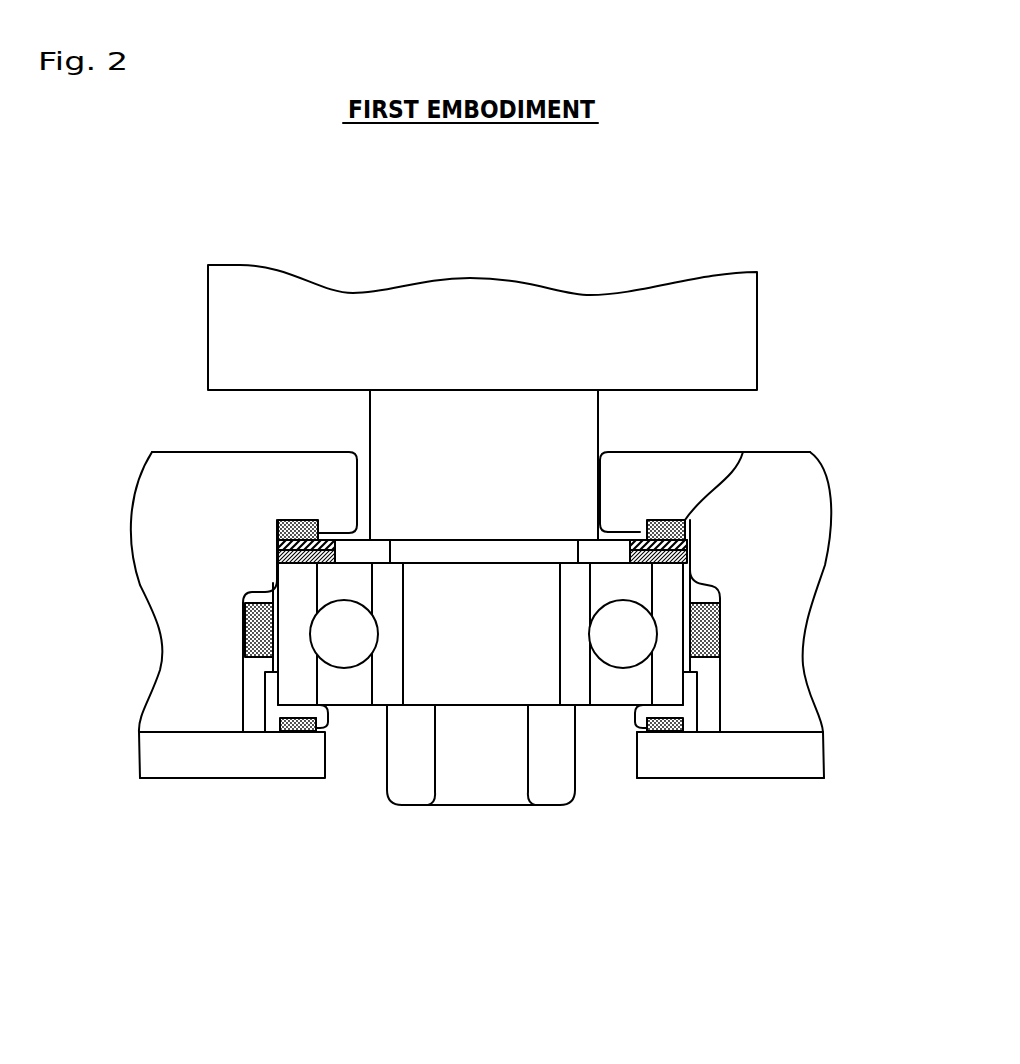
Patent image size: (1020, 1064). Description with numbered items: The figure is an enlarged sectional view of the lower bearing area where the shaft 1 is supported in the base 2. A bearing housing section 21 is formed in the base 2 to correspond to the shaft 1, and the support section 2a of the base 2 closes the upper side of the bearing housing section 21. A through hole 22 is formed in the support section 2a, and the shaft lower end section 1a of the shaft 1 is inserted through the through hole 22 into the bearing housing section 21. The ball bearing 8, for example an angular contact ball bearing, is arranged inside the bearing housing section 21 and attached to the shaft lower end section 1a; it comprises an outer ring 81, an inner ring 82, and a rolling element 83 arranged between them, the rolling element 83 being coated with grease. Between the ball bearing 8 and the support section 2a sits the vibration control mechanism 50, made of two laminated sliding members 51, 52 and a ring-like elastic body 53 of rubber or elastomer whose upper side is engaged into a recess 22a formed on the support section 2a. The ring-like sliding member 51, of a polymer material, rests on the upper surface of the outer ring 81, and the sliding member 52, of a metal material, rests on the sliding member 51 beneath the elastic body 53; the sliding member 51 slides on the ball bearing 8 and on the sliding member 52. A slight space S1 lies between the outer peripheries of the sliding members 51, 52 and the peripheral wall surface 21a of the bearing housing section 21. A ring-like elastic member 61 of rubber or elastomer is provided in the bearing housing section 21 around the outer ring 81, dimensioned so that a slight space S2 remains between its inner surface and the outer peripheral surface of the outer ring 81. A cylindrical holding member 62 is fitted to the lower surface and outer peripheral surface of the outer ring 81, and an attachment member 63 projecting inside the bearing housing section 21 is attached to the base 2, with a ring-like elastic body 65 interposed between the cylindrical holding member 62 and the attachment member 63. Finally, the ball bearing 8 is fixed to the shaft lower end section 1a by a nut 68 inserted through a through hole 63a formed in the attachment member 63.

The shaft 1 is at (512, 320).
The shaft lower end section 1a is at (557, 437).
The base 2 is at (783, 640).
The support section 2a is at (305, 490).
The bearing housing section 21 is at (248, 703).
The peripheral wall surface 21a is at (692, 565).
The through hole 22 is at (363, 505).
The recess 22a is at (740, 455).
The vibration control mechanism 50 is at (63, 410).
The sliding member 51 is at (278, 558).
The sliding member 52 is at (278, 545).
The elastic body 53 is at (278, 522).
The elastic member 61 is at (250, 628).
The cylindrical holding member 62 is at (652, 712).
The attachment member 63 is at (777, 757).
The through hole 63a is at (617, 757).
The ring-like elastic body 65 is at (293, 725).
The nut 68 is at (493, 763).
The ball bearing 8 is at (597, 722).
The outer ring 81 is at (293, 672).
The inner ring 82 is at (390, 683).
The rolling element 83 is at (355, 650).
The space S1 is at (690, 562).
The space S2 is at (687, 635).